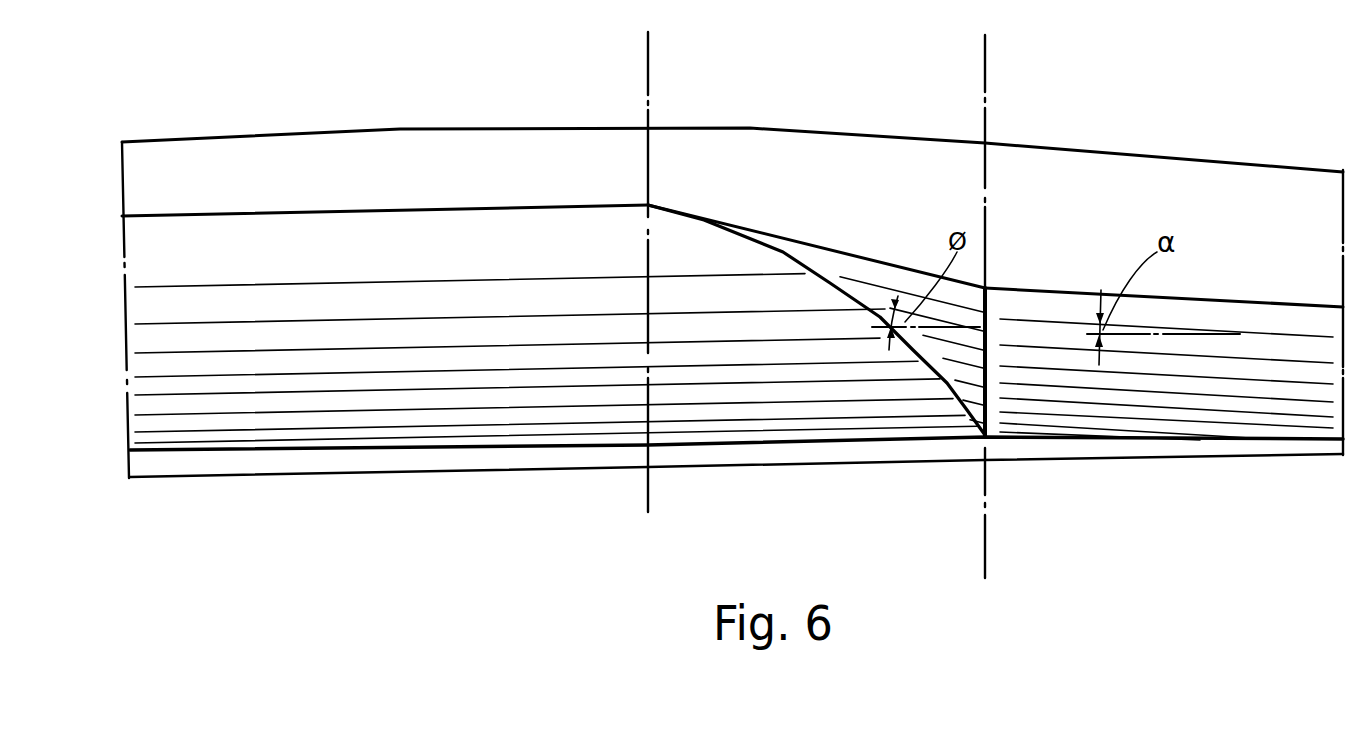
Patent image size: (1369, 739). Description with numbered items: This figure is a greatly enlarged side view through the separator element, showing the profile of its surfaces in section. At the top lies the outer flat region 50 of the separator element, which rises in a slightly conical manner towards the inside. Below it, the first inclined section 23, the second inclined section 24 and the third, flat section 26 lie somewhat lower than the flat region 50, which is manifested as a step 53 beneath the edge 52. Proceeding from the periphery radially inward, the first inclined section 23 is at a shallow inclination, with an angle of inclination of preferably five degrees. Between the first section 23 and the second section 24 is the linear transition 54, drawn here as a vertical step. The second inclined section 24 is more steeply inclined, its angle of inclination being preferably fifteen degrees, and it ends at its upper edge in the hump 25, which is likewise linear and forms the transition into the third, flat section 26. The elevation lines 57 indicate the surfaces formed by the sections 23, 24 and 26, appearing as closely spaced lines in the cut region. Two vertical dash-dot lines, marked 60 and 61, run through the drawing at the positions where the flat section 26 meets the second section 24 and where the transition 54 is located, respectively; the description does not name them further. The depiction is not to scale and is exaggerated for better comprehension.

The first inclined section 23 is at (1190, 313).
The second inclined section 24 is at (903, 283).
The hump 25 is at (822, 275).
The third, flat section 26 is at (532, 232).
The outer flat region 50 is at (898, 135).
The edge 52 is at (1113, 150).
The step 53 is at (1190, 177).
The linear transition 54 is at (990, 342).
The elevation lines 57 is at (496, 412).
The section plane 60 is at (648, 60).
The section plane 61 is at (983, 73).